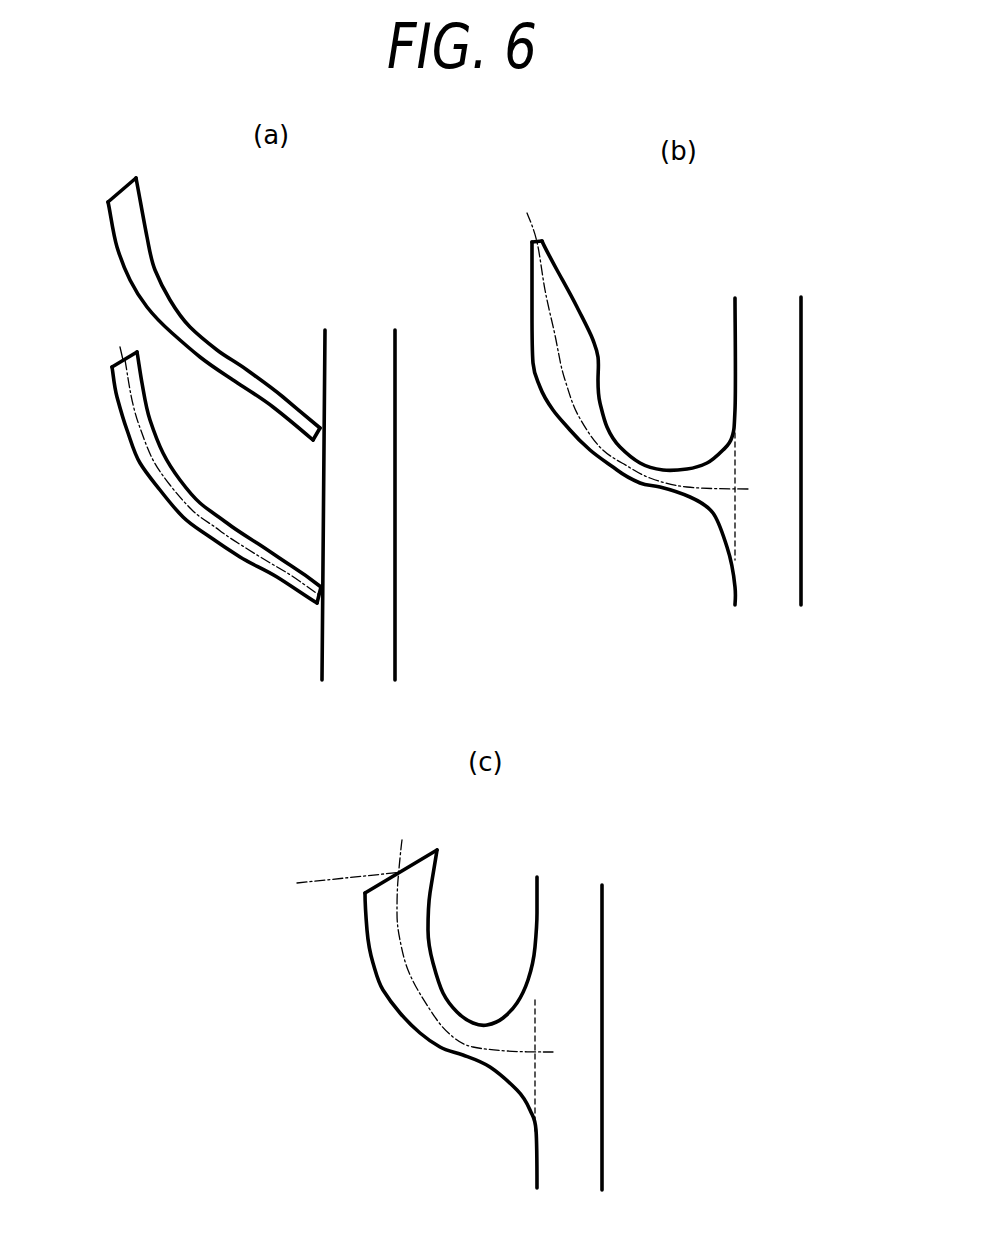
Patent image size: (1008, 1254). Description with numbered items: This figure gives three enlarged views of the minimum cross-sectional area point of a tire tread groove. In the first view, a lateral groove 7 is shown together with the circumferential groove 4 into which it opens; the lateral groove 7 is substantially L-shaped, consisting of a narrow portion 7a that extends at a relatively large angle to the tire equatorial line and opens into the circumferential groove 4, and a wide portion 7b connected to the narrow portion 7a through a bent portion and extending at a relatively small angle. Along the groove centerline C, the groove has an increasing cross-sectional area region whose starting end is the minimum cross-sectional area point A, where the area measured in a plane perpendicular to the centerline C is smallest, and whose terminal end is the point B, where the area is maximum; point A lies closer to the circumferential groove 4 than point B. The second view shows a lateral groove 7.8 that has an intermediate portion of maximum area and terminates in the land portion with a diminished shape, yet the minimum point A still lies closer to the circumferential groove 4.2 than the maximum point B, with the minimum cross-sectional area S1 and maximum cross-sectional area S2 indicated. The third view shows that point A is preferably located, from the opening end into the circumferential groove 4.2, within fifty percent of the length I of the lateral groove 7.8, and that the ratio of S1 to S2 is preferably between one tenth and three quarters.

The lateral groove 7 is at (172, 473).
The narrow portion 7a is at (263, 570).
The wide portion 7b is at (118, 413).
The circumferential groove 4 is at (357, 512).
The lateral grooves 7.8 is at (576, 298).
The circumferential grooves 4.2 is at (775, 360).
The minimum cross-sectional area point A is at (330, 573).
The maximum cross-sectional area point B is at (163, 359).
The groove centerline C is at (168, 503).
The minimum cross-sectional area S1 is at (630, 480).
The maximum cross-sectional area S2 is at (552, 364).
The length of the lateral groove I is at (505, 1145).